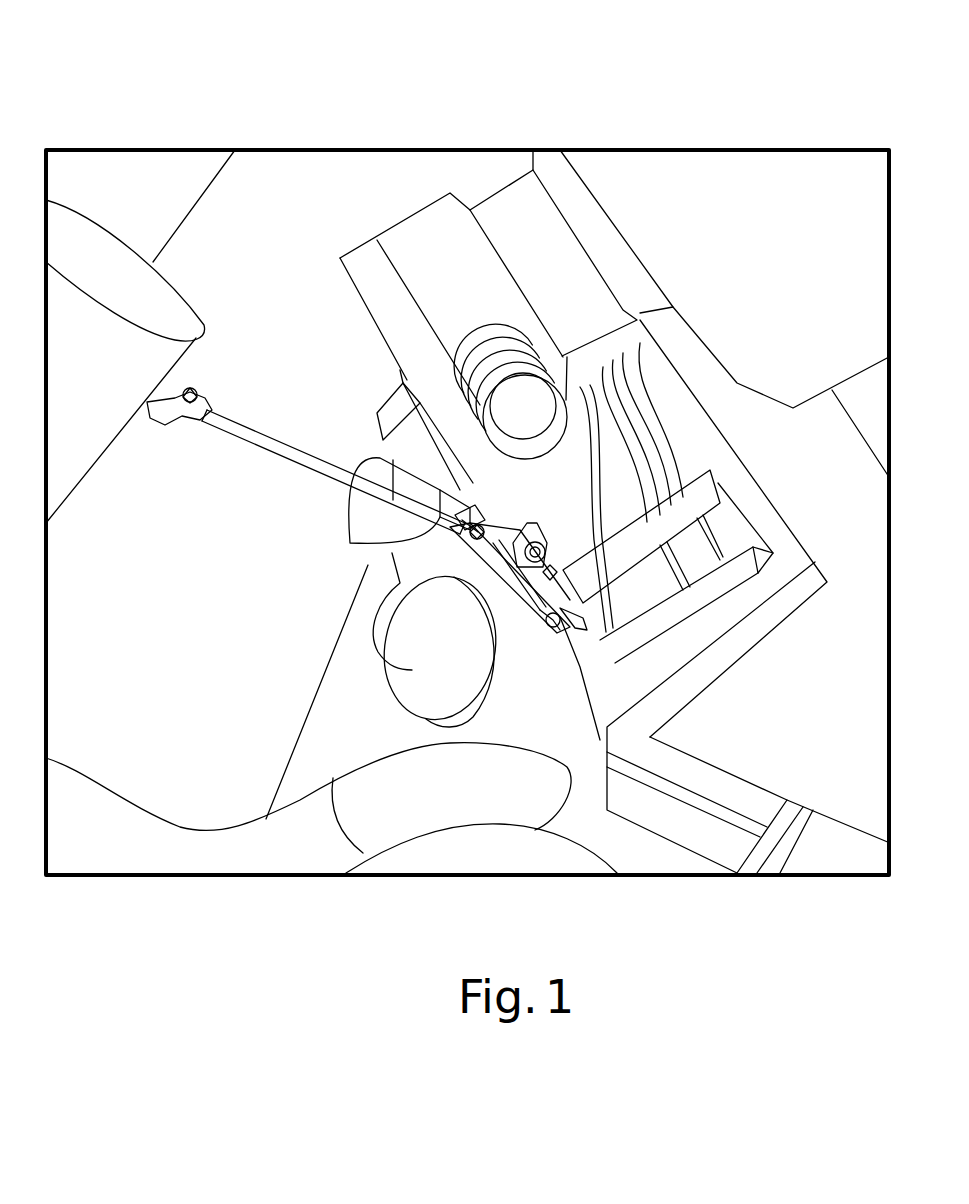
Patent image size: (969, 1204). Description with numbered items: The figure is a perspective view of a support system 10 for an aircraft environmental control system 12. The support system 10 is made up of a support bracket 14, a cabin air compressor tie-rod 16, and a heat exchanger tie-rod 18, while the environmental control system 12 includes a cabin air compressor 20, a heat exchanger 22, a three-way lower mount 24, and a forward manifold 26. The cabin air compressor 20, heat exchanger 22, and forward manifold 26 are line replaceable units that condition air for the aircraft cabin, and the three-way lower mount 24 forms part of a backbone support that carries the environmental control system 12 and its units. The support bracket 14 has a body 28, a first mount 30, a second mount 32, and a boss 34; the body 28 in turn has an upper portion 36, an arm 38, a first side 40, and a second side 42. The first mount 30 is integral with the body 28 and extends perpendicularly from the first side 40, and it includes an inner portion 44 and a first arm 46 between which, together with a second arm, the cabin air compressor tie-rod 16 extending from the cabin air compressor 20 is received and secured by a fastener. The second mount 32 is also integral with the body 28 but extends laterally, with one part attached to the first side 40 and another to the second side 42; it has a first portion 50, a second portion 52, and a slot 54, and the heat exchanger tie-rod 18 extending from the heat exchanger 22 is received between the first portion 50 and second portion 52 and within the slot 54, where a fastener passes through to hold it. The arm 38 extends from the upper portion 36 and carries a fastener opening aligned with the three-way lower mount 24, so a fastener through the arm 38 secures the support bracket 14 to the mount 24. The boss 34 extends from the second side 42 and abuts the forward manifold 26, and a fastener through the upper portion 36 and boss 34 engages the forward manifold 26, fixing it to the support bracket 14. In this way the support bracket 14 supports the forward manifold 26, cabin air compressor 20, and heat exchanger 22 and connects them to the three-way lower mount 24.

The support system 10 is at (350, 586).
The environmental control system 12 is at (331, 108).
The support bracket 14 is at (505, 588).
The cabin air compressor (CAC) tie-rod 16 is at (493, 470).
The heat exchanger (HX) tie-rod 18 is at (272, 455).
The cabin air compressor (CAC) 20 is at (460, 297).
The heat exchanger 22 is at (132, 352).
The three-way lower mount 24 is at (577, 667).
The forward manifold 26 is at (368, 641).
The body 28 is at (527, 585).
The first mount 30 is at (560, 524).
The second mount 32 is at (455, 512).
The boss 34 is at (548, 582).
The upper portion 36 is at (493, 547).
The arm 38 is at (525, 580).
The first side 40 is at (540, 598).
The second side 42 is at (555, 590).
The inner portion 44 is at (466, 519).
The first arm 46 is at (540, 518).
The first portion 50 is at (460, 523).
The second portion 52 is at (463, 537).
The slot 54 is at (453, 540).